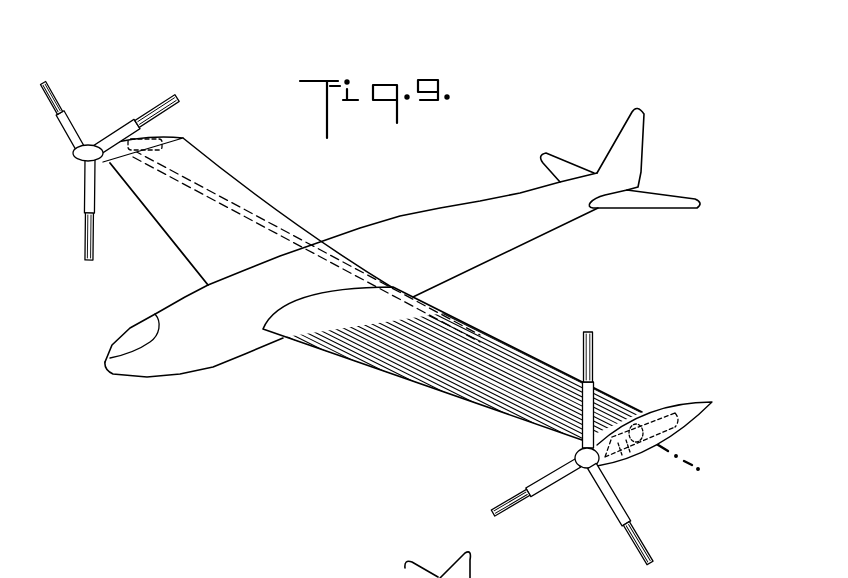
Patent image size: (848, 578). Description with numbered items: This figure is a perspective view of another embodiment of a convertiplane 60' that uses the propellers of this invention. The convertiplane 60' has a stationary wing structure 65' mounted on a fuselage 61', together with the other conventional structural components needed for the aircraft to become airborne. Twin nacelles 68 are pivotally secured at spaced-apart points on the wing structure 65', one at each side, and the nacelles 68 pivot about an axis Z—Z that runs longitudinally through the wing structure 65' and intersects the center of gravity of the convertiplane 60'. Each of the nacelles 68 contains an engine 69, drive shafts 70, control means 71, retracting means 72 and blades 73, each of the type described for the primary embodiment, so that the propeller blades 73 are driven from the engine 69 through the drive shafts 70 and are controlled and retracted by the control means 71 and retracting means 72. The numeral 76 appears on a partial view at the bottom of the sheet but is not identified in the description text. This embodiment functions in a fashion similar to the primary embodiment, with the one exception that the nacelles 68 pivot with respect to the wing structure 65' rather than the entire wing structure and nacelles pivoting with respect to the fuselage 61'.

The convertiplane 60' is at (402, 316).
The fuselage 61' is at (402, 242).
The stationary wing structure 65' is at (159, 224).
The nacelles 68 is at (187, 138).
The engine 69 is at (685, 427).
The drive shafts 70 is at (636, 447).
The control means 71 is at (620, 455).
The retracting means 72 is at (583, 468).
The blades 73 is at (630, 523).
The tail fragment 76 is at (412, 565).
The axis Z— Z is at (110, 135).